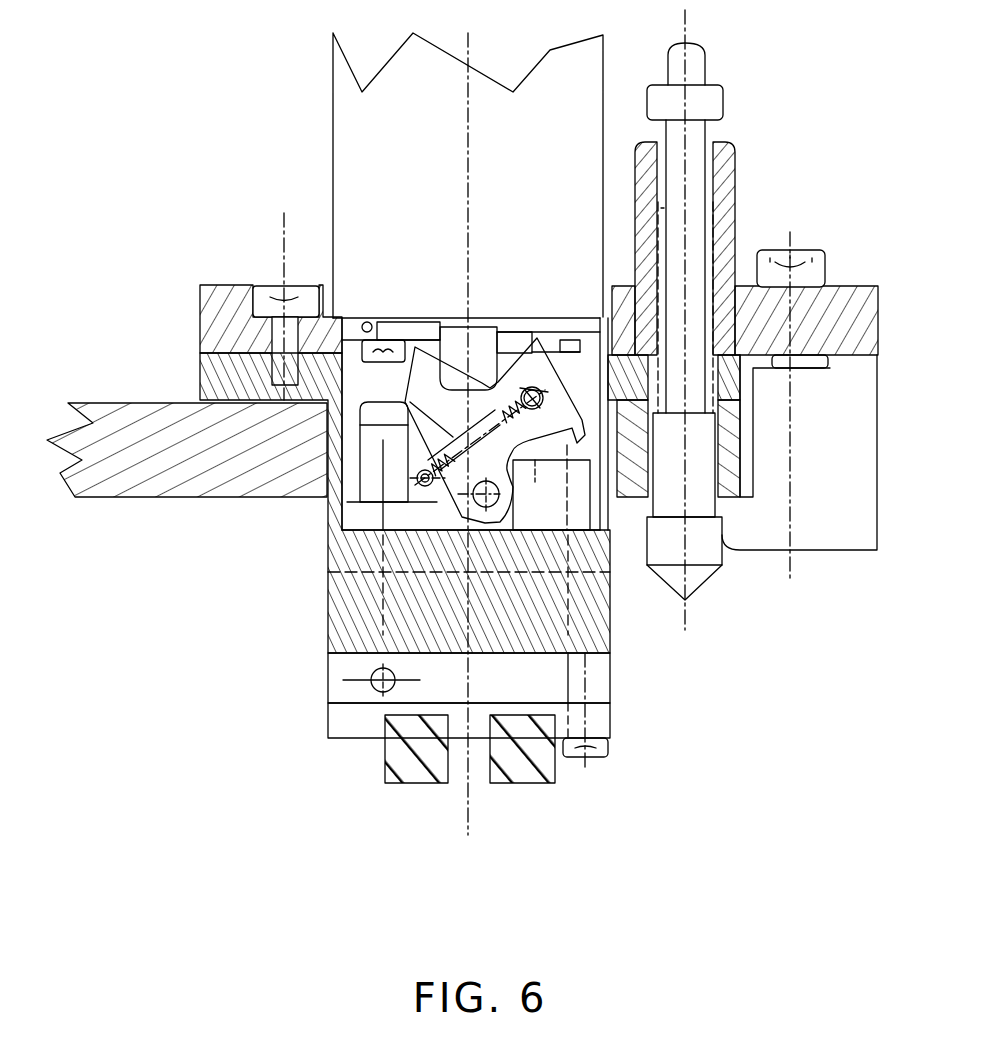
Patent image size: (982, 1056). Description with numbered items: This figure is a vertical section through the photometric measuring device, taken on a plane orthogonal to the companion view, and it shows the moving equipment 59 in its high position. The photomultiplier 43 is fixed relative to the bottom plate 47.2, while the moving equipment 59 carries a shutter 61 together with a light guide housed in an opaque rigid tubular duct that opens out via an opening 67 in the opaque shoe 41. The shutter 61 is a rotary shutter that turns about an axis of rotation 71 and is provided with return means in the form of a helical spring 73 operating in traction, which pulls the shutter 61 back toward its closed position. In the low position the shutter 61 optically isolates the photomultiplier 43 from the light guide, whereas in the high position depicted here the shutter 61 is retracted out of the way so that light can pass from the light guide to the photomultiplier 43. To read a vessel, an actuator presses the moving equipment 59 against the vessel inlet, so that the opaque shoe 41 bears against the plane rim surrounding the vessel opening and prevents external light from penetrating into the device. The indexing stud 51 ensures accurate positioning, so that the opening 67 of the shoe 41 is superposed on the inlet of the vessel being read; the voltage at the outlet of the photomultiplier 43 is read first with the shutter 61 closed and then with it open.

The photomultiplier 43 is at (333, 178).
The shutter 61 is at (517, 378).
The axis of rotation 71 is at (462, 515).
The helical spring 73 is at (499, 494).
The indexing stud 51 is at (700, 590).
The bottom plate 47.2 is at (200, 497).
The moving equipment 59 is at (296, 605).
The opening 67 is at (463, 778).
The opaque shoe 41 is at (533, 775).